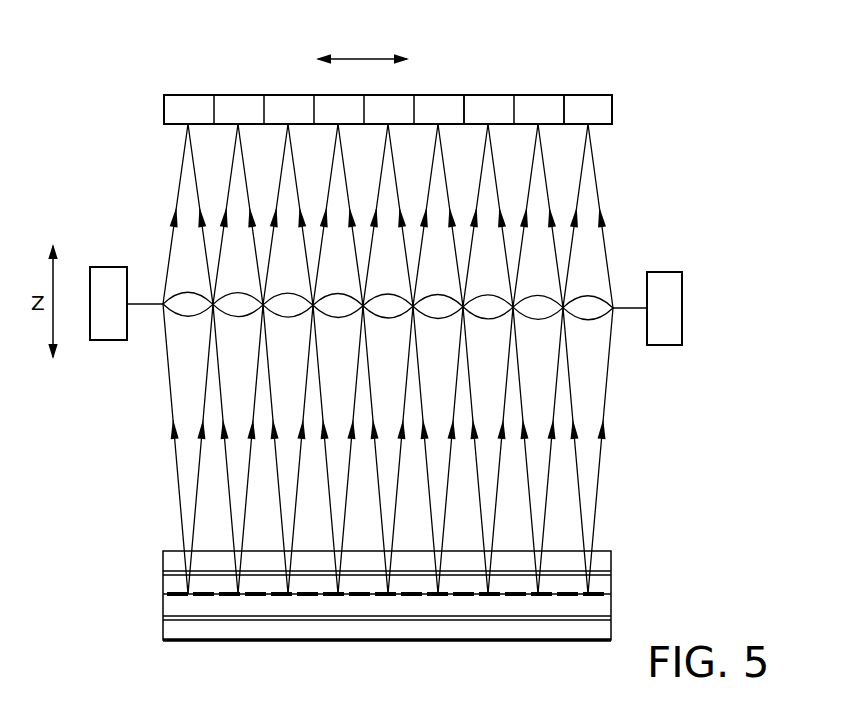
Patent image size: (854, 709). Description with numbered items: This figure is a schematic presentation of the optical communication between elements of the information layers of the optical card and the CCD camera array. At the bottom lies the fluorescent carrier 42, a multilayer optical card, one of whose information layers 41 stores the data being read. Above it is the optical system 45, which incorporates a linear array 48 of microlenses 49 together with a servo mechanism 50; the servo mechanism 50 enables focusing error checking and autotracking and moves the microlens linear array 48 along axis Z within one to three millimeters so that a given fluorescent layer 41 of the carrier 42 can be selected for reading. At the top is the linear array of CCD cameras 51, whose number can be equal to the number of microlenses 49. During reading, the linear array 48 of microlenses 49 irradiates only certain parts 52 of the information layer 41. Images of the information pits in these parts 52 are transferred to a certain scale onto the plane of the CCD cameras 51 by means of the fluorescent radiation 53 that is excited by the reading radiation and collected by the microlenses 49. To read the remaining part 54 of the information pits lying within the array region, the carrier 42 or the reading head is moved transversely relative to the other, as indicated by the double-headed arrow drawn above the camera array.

The light emitting layer 41 is at (608, 598).
The light source substrate 42 is at (424, 588).
The optical scanning system 45 is at (735, 200).
The detector array 48 is at (578, 80).
The lens 49 is at (185, 301).
The actuator 50 is at (112, 343).
The detector element 51 is at (531, 112).
The light emitting element 52 is at (539, 598).
The light beam 53 is at (600, 237).
The light emitting element 54 is at (217, 598).